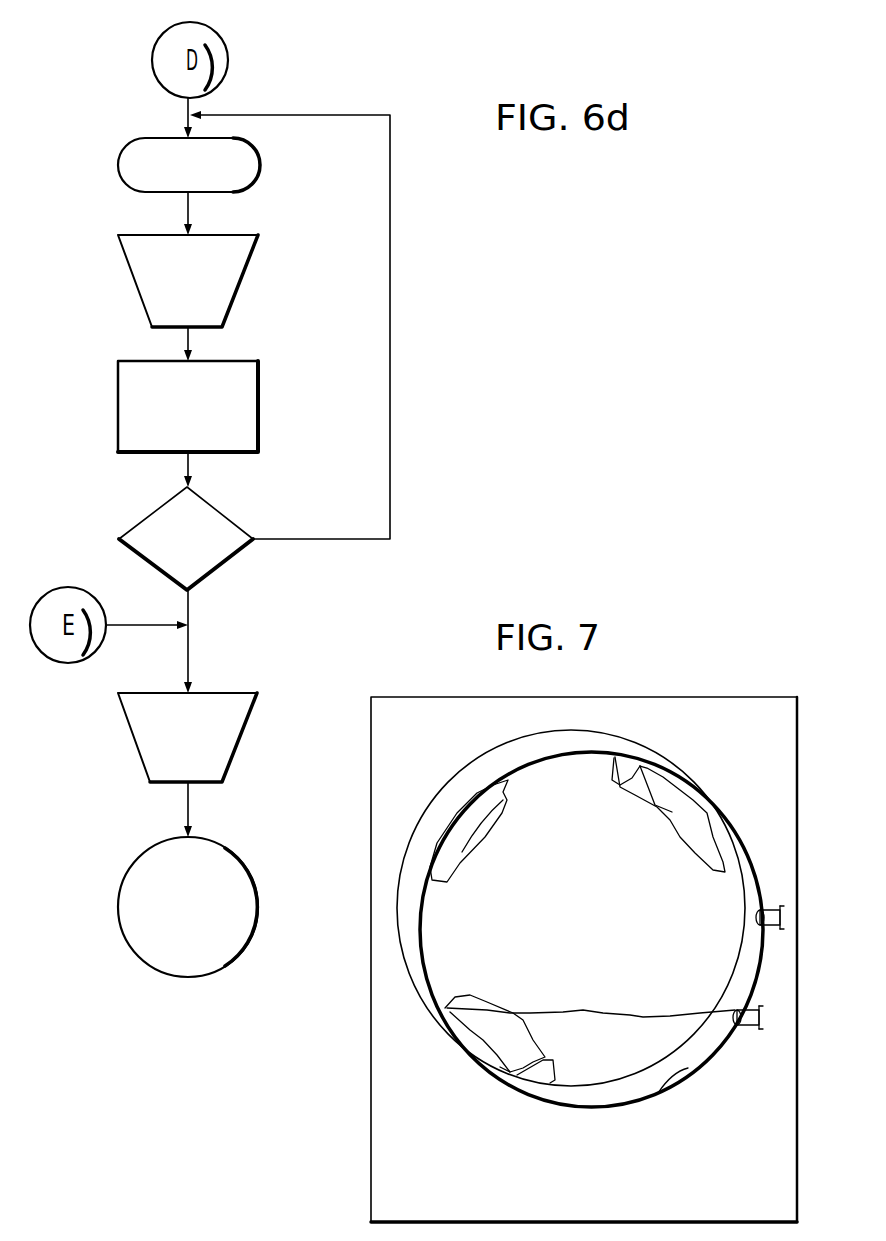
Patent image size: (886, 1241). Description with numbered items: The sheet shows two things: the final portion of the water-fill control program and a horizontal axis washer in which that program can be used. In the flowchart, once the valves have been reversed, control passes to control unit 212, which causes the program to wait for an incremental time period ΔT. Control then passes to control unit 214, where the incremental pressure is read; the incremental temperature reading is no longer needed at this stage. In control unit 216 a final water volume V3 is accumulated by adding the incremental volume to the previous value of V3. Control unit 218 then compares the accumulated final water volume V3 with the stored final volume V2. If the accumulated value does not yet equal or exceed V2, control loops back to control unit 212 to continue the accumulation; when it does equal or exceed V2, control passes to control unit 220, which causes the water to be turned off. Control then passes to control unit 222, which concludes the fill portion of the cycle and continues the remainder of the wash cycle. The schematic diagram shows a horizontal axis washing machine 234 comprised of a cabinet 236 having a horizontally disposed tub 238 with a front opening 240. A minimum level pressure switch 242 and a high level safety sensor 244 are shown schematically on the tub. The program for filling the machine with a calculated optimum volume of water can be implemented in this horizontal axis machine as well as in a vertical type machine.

In FIG. 6d, the control unit 212 is at (118, 163).
In FIG. 6d, the control unit 214 is at (145, 278).
In FIG. 6d, the control unit 216 is at (118, 398).
In FIG. 6d, the control unit 218 is at (135, 537).
In FIG. 6d, the control unit 220 is at (130, 718).
In FIG. 6d, the control unit 222 is at (125, 895).
In FIG. 7, the horizontal axis washing machine 234 is at (360, 1058).
In FIG. 7, the cabinet 236 is at (382, 1140).
In FIG. 7, the horizontally disposed tub 238 is at (578, 752).
In FIG. 7, the front opening 240 is at (660, 1088).
In FIG. 7, the minimum level pressure switch 242 is at (757, 1025).
In FIG. 7, the high level safety sensor 244 is at (773, 910).